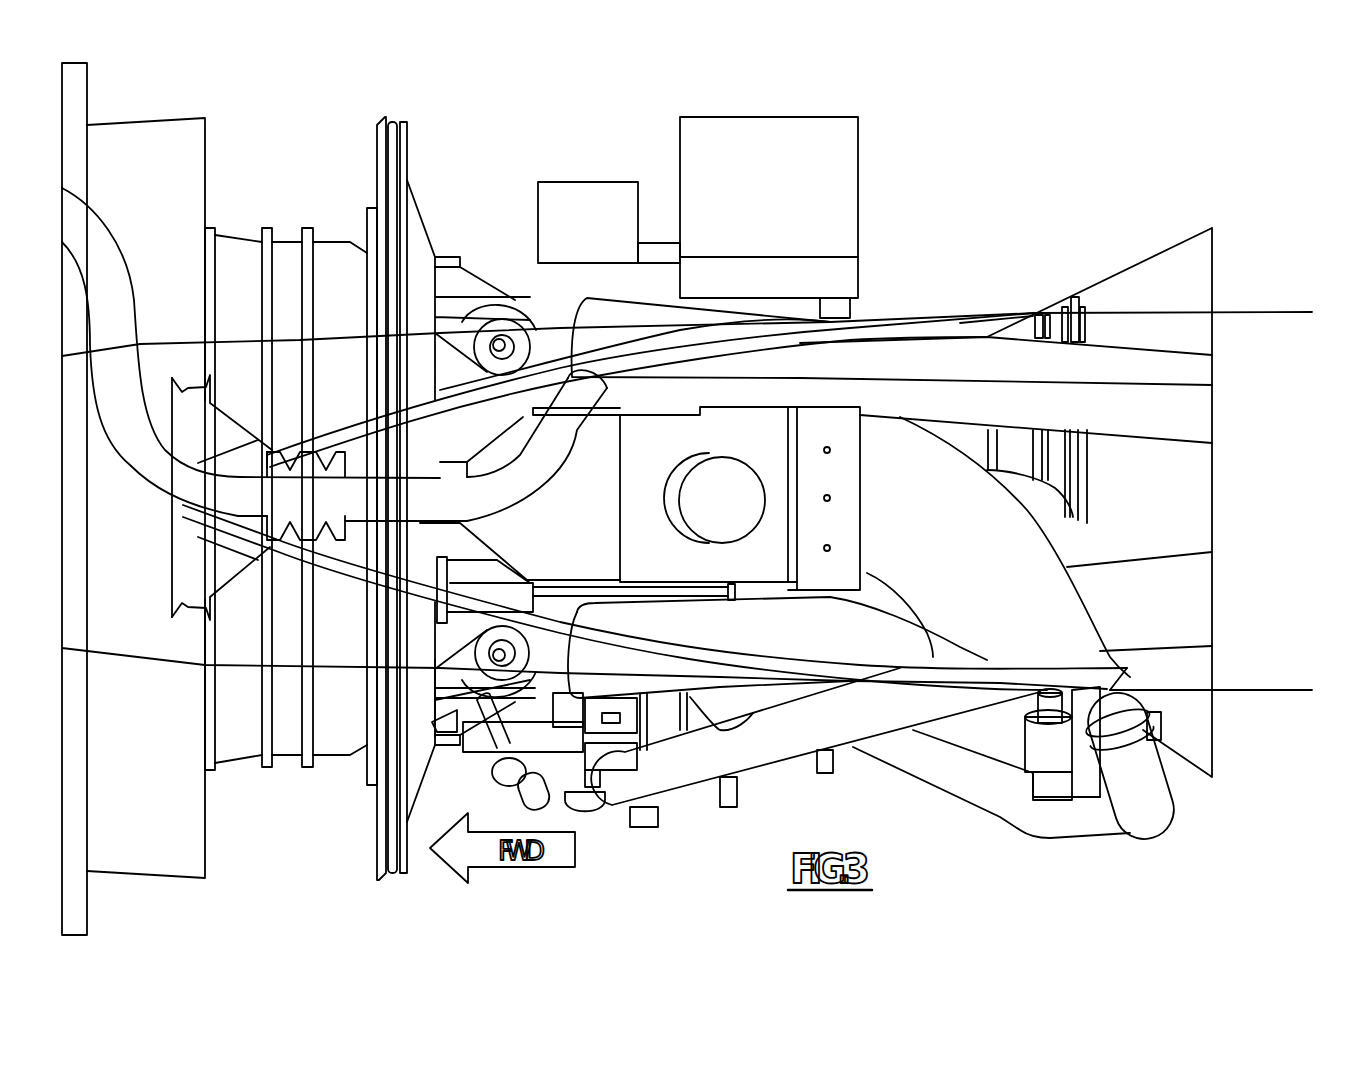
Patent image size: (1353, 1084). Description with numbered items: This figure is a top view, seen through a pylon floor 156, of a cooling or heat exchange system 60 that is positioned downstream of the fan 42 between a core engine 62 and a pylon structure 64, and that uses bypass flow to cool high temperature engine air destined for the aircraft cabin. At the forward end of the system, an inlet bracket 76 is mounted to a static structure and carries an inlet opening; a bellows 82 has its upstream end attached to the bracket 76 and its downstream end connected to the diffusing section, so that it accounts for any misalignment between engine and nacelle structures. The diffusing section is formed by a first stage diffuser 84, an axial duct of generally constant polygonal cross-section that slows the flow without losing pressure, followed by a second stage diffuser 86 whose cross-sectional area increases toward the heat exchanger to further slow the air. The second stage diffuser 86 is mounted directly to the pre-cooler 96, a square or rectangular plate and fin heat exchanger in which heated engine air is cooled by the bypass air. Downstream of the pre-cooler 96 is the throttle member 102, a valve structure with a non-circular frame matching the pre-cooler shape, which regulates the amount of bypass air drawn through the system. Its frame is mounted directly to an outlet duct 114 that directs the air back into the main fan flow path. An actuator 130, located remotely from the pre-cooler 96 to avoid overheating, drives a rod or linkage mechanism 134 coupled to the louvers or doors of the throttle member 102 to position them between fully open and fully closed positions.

The fan 42 is at (205, 850).
The heat exchange system 60 is at (287, 600).
The core engine 62 is at (1057, 337).
The pylon structure 64 is at (172, 337).
The bracket 76 is at (240, 455).
The bellows 82 is at (270, 548).
The first stage diffuser 84 is at (443, 457).
The second stage diffuser 86 is at (500, 445).
The pre-cooler 96 is at (647, 430).
The throttle member 102 is at (850, 443).
The outlet duct 114 is at (952, 528).
The actuator 130 is at (470, 567).
The rod or linkage mechanism 134 is at (620, 597).
The pylon floor 156 is at (1268, 314).